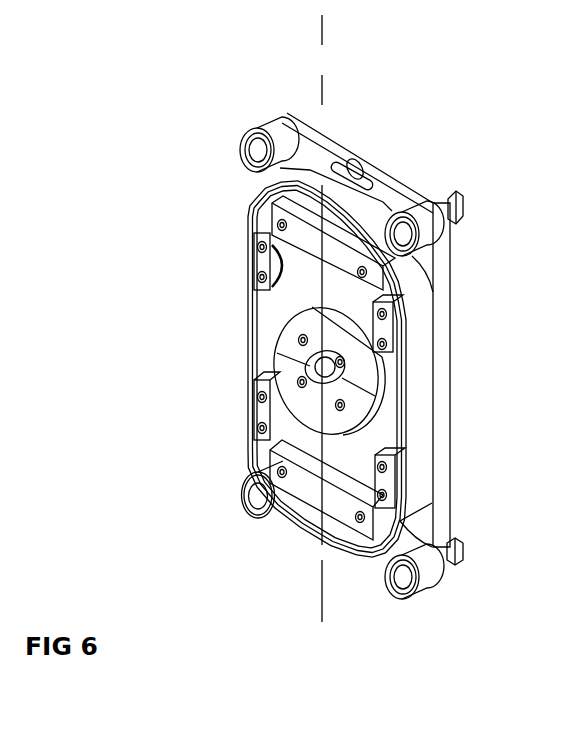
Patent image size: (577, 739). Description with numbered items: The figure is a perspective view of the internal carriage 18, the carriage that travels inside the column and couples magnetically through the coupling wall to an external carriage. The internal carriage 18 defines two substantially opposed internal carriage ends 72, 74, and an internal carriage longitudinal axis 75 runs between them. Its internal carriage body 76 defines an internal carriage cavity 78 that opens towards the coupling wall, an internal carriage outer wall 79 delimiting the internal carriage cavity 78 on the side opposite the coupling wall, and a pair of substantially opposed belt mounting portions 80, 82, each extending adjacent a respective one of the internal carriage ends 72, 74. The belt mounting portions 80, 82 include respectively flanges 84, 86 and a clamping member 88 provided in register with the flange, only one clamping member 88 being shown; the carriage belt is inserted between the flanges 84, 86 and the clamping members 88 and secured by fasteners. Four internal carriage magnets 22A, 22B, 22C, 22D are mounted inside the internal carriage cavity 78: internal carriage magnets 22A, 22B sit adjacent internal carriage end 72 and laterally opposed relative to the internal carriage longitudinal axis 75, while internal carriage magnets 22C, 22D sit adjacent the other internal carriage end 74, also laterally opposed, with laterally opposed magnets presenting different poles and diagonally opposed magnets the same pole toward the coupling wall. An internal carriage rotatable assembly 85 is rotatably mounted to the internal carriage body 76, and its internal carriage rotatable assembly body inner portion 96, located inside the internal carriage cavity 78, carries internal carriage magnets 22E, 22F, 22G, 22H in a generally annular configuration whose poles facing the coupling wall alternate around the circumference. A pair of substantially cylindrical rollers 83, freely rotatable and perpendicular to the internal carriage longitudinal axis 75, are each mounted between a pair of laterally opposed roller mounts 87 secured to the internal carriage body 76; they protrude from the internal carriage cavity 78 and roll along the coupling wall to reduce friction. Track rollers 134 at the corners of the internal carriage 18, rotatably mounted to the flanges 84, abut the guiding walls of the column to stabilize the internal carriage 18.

The internal carriage 18 is at (128, 124).
The internal carriage magnet 22A is at (283, 231).
The internal carriage magnet 22B is at (383, 268).
The internal carriage magnet 22C is at (278, 488).
The internal carriage magnet 22D is at (355, 522).
The internal carriage magnet 22E is at (298, 326).
The internal carriage magnet 22F is at (342, 345).
The internal carriage magnet 22G is at (345, 424).
The internal carriage magnet 22H is at (287, 370).
The internal carriage end 72 is at (337, 128).
The internal carriage end 74 is at (381, 562).
The internal carriage longitudinal axis 75 is at (322, 613).
The internal carriage body 76 is at (243, 211).
The internal carriage cavity 78 is at (267, 342).
The internal carriage outer wall 79 is at (450, 365).
The belt mounting portion 80 is at (310, 128).
The belt mounting portion 82 is at (432, 541).
The roller 83 is at (258, 277).
The flange 84 is at (390, 203).
The internal carriage rotatable assembly 85 is at (297, 301).
The flange 86 is at (427, 530).
The roller mount 87 is at (257, 412).
The clamping member 88 is at (371, 161).
The internal carriage rotatable assembly body inner portion 96 is at (393, 393).
The track roller 134 is at (246, 138).